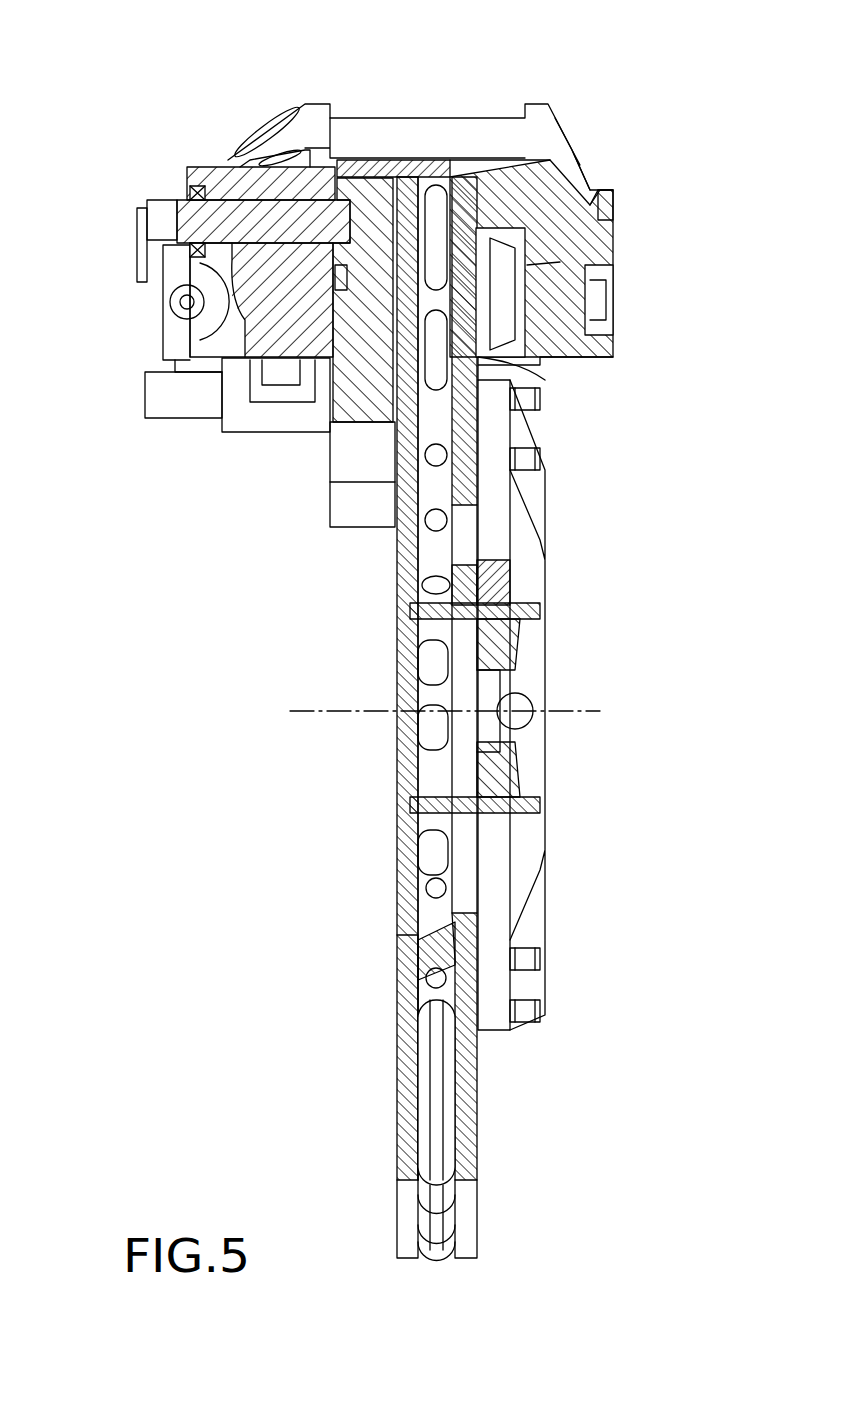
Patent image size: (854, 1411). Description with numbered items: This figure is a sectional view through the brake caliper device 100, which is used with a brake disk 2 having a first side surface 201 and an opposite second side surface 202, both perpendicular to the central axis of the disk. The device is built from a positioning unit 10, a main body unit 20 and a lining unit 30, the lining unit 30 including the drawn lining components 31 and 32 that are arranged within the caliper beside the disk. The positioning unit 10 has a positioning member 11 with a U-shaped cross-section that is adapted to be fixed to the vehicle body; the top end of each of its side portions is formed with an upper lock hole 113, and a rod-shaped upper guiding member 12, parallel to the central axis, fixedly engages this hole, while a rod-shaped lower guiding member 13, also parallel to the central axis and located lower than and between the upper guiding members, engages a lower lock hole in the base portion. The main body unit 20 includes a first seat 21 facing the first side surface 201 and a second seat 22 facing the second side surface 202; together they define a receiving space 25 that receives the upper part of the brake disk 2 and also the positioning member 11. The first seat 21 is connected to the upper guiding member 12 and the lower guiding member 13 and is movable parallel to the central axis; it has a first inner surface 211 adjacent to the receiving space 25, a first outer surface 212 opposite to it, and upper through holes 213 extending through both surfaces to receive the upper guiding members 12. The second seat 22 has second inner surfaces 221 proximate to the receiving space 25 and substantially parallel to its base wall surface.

The brake caliper device 100 is at (590, 114).
The brake disk 2 is at (468, 1147).
The first side surface 201 is at (395, 1107).
The second side surface 202 is at (477, 1100).
The positioning unit 10 is at (328, 504).
The positioning member 11 is at (362, 474).
The upper guiding member 12 is at (153, 225).
The lower guiding member 13 is at (160, 401).
The upper lock hole 113 is at (385, 200).
The main body unit 20 is at (255, 116).
The first seat 21 is at (388, 237).
The first inner surface 211 is at (302, 357).
The first outer surface 212 is at (188, 187).
The upper through hole 213 is at (240, 190).
The second seat 22 is at (583, 180).
The second inner surface 221 is at (527, 265).
The receiving space 25 is at (520, 405).
The lining unit 30 is at (352, 181).
The support column body 31 is at (363, 300).
The pocket / opening 32 is at (508, 243).